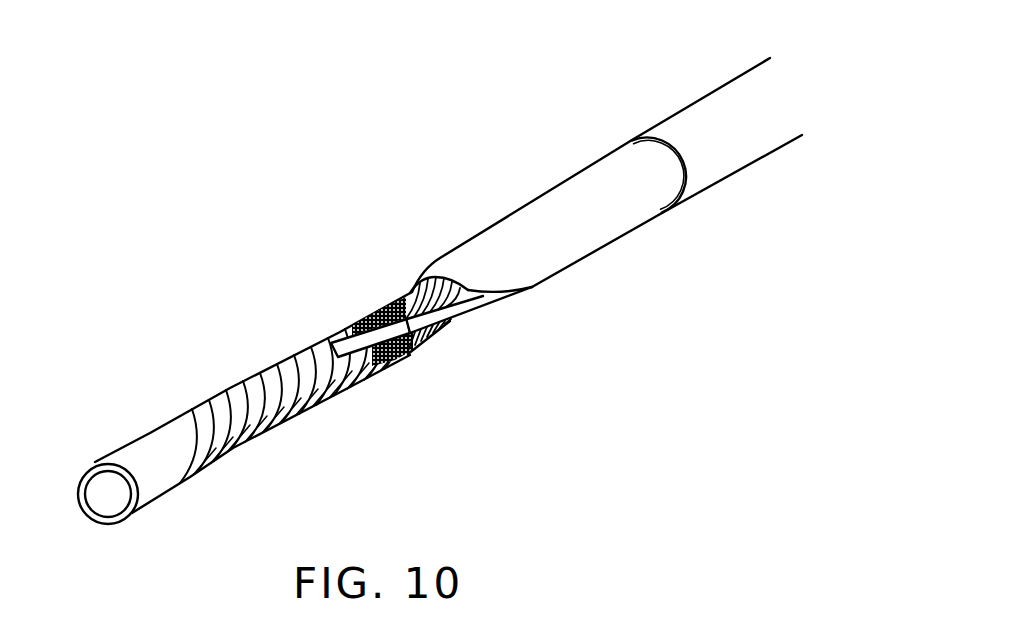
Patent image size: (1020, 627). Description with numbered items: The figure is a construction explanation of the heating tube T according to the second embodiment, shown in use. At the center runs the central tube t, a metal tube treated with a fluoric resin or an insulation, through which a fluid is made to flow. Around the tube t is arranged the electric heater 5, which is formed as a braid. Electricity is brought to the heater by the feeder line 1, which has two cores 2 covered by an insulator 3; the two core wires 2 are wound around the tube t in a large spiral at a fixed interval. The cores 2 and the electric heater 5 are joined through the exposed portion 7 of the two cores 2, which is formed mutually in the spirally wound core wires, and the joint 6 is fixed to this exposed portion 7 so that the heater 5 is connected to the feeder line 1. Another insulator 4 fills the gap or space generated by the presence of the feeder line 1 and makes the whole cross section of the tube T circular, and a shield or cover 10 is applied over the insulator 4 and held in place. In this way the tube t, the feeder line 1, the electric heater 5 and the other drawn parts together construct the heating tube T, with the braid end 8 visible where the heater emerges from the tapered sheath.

The heating tube T is at (440, 298).
The central tube t is at (167, 478).
The electric heater 5 is at (282, 408).
The cores 2 is at (330, 338).
The insulator 3 is at (468, 307).
The exposed portion 7 is at (410, 330).
The joint 6 is at (398, 352).
The braid end 8 is at (394, 283).
The feeder line 1 is at (518, 303).
The insulator 4 is at (594, 237).
The cover 10 is at (714, 166).